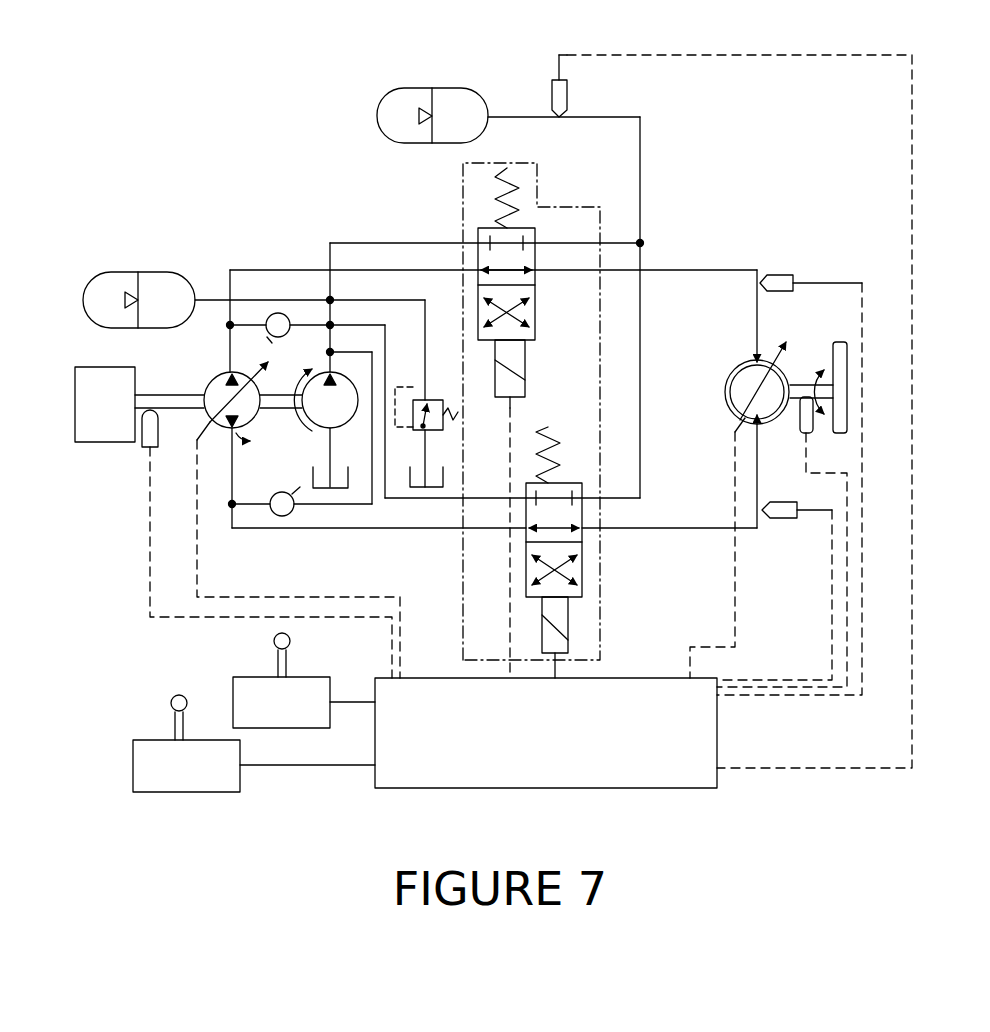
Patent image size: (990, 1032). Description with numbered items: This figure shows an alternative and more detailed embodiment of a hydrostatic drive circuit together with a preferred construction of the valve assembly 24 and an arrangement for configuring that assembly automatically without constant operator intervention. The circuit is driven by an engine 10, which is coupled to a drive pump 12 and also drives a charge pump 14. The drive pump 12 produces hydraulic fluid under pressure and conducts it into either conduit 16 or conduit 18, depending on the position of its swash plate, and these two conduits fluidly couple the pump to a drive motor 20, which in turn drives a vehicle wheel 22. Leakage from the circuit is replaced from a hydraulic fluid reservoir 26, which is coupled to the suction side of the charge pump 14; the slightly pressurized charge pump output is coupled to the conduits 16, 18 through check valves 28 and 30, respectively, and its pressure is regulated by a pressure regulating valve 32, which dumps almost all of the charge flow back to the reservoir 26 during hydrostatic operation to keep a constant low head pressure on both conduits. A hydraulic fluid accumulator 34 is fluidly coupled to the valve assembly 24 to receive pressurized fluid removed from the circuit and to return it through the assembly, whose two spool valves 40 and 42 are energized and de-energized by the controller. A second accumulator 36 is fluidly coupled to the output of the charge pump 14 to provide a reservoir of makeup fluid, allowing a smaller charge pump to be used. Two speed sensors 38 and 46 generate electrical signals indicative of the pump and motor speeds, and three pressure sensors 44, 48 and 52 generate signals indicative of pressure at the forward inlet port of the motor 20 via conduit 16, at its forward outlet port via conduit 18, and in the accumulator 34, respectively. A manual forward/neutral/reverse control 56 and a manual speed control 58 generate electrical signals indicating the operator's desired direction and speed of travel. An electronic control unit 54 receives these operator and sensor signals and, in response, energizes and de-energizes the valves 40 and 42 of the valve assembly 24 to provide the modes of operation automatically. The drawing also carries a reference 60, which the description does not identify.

The engine 10 is at (107, 366).
The drive pump 12 is at (225, 374).
The charge pump 14 is at (340, 370).
The conduit 16 is at (293, 268).
The conduit 18 is at (428, 530).
The drive motor 20 is at (735, 362).
The vehicle wheel 22 is at (847, 392).
The valve assembly 24 is at (460, 175).
The hydraulic fluid reservoir 26 is at (352, 490).
The check valve 28 is at (278, 313).
The check valve 30 is at (291, 490).
The pressure regulating valve 32 is at (448, 418).
The hydraulic fluid accumulator 34 is at (375, 118).
The second accumulator 36 is at (157, 272).
The speed sensor 38 is at (140, 448).
The valve 40 is at (537, 315).
The valve 42 is at (583, 513).
The pressure sensor 44 is at (773, 272).
The speed sensor 46 is at (812, 418).
The pressure sensor 48 is at (790, 522).
The pressure sensor 52 is at (567, 95).
The electronic control unit 54 is at (546, 733).
The forward/neutral/reverse operator control 56 is at (230, 690).
The manual speed control 58 is at (163, 740).
The pump displacement control line 60 is at (270, 598).